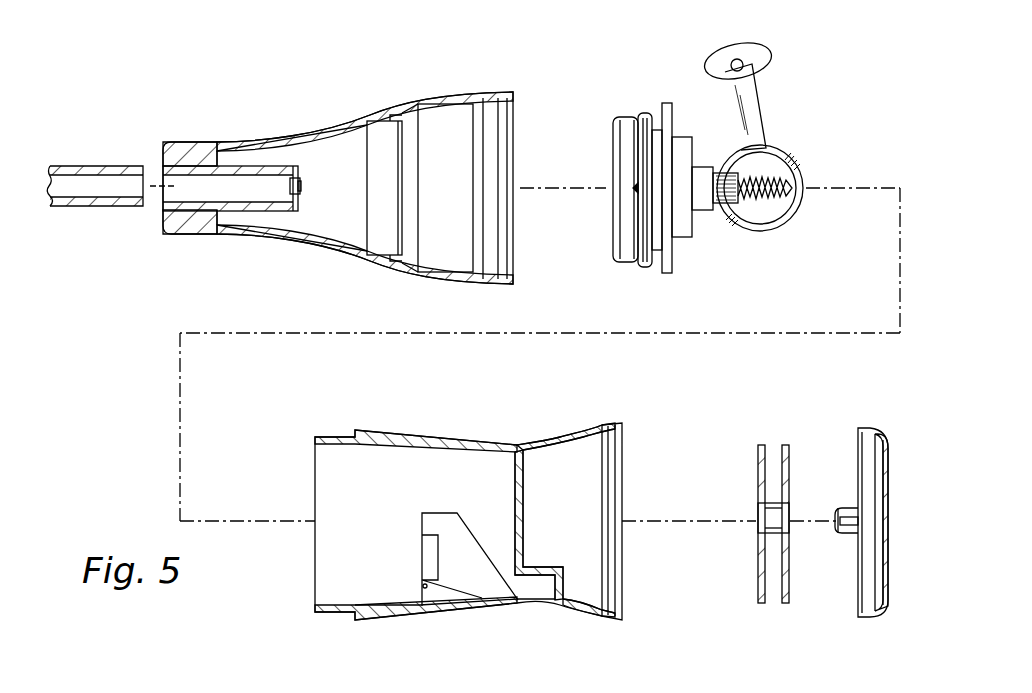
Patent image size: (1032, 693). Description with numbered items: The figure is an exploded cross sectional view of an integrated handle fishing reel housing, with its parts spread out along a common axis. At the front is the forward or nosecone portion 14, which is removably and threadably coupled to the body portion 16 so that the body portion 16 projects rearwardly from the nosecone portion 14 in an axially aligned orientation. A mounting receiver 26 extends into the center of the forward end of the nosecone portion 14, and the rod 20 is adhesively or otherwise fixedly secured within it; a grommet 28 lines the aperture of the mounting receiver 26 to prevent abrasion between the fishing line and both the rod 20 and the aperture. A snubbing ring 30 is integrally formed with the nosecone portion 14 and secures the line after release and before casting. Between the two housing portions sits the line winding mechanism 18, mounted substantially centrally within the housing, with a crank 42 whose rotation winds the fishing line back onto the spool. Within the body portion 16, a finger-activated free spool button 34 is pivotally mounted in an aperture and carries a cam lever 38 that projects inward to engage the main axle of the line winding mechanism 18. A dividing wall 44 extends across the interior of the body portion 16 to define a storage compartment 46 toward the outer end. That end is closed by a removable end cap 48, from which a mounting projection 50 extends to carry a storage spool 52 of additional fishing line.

The forward or nosecone portion 14 is at (338, 172).
The body portion 16 is at (468, 508).
The line winding mechanism 18 is at (727, 155).
The rod 20 is at (83, 206).
The mounting receiver 26 is at (275, 146).
The grommet 28 is at (302, 183).
The snubbing ring 30 is at (410, 240).
The finger-activated free spool button 34 is at (490, 604).
The cam lever 38 is at (437, 542).
The crank 42 is at (760, 106).
The dividing wall 44 is at (515, 480).
The storage compartment 46 is at (560, 495).
The end cap 48 is at (889, 500).
The mounting projection 50 is at (840, 540).
The storage spool 52 is at (790, 452).